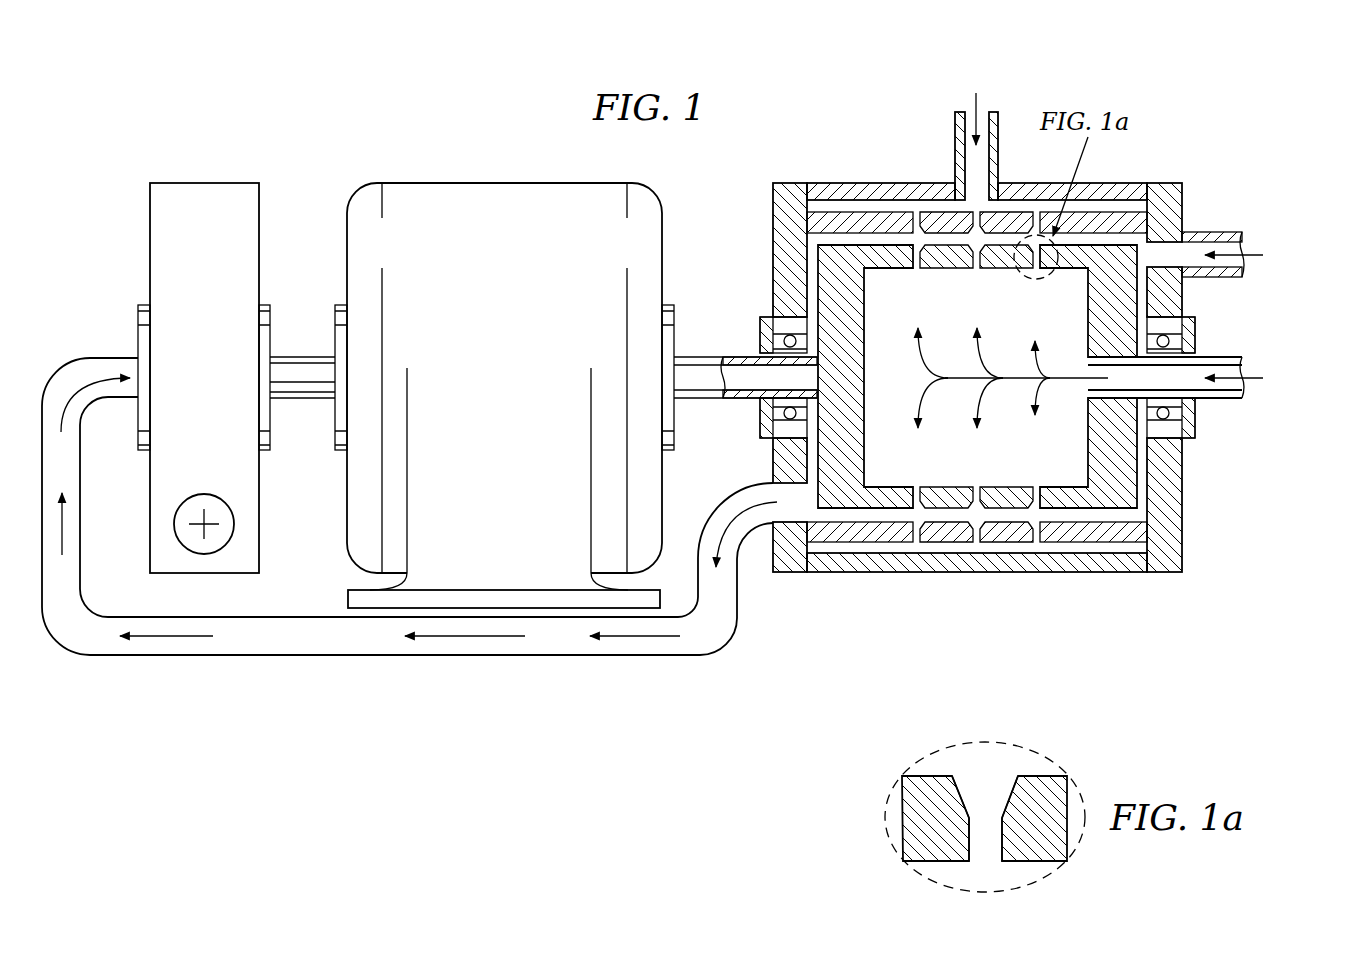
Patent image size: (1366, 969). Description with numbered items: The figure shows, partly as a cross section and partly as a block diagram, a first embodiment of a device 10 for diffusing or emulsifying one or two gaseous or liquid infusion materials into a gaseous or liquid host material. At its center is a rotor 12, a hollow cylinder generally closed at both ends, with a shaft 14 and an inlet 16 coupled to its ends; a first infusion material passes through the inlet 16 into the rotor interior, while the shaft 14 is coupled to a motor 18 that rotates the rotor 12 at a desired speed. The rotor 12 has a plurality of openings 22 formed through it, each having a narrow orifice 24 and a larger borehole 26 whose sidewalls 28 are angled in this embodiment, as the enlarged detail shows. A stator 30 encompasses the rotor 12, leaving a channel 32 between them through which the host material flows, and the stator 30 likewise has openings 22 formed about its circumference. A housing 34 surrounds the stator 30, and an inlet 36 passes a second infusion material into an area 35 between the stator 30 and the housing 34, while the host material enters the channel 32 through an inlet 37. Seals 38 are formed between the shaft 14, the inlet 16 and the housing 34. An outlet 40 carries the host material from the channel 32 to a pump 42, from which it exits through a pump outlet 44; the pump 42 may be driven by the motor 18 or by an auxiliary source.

In FIG. 1, the device 10 is at (549, 143).
In FIG. 1, the rotor 12 is at (863, 290).
In FIG. 1, the shaft 14 is at (697, 400).
In FIG. 1, the inlet 16 is at (1218, 357).
In FIG. 1, the motor 18 is at (455, 183).
In FIG. 1, the openings 22 is at (915, 487).
In FIG. 1a, the openings 22 is at (970, 712).
In FIG. 1a, the narrow orifice 24 is at (987, 853).
In FIG. 1a, the borehole 26 is at (986, 771).
In FIG. 1a, the sidewalls 28 is at (960, 786).
In FIG. 1, the stator 30 is at (860, 537).
In FIG. 1, the channel 32 is at (810, 243).
In FIG. 1, the housing 34 is at (786, 190).
In FIG. 1, the area 35 is at (1128, 210).
In FIG. 1, the inlet 36 is at (956, 140).
In FIG. 1, the inlet 37 is at (1218, 232).
In FIG. 1, the seals 38 is at (750, 327).
In FIG. 1, the outlet 40 is at (223, 655).
In FIG. 1, the pump 42 is at (195, 183).
In FIG. 1, the pump outlet 44 is at (203, 494).